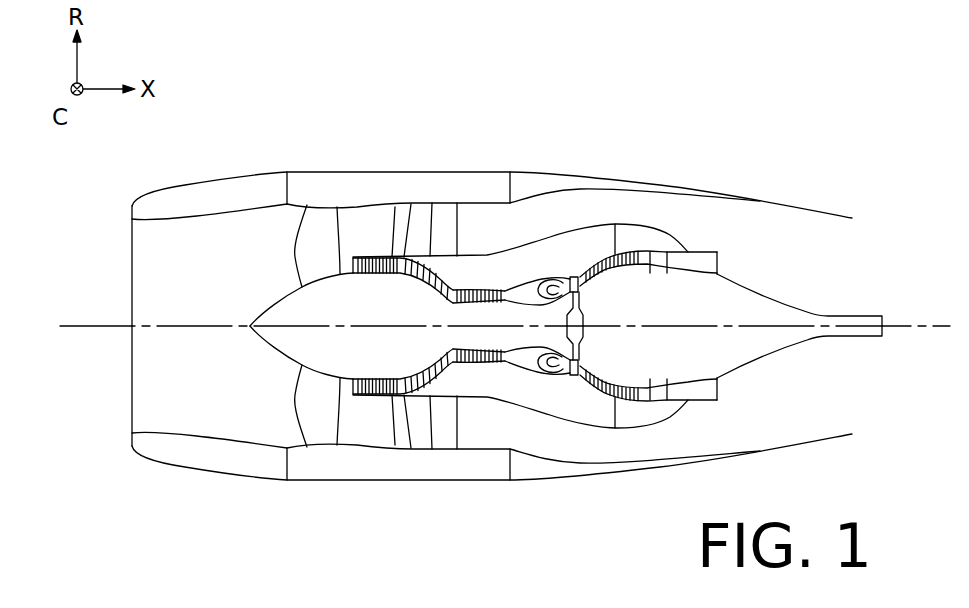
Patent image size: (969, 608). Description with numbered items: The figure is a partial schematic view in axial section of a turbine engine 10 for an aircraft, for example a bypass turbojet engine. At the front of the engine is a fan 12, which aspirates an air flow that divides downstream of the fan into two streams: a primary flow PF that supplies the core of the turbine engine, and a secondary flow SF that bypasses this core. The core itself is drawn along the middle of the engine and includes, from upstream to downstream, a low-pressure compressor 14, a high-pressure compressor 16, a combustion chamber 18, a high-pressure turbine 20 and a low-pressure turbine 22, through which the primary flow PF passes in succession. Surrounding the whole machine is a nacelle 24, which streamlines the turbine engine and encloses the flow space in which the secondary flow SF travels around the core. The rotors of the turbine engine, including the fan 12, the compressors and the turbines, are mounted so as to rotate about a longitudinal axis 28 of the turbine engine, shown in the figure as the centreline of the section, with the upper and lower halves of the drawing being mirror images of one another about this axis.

The turbine engine 10 is at (505, 297).
The fan 12 is at (310, 398).
The low-pressure compressor 14 is at (375, 258).
The high-pressure compressor 16 is at (490, 289).
The combustion chamber 18 is at (548, 279).
The high-pressure turbine 20 is at (574, 278).
The low-pressure turbine 22 is at (640, 252).
The nacelle 24 is at (405, 183).
The longitudinal axis 28 is at (78, 322).
The primary flow PF is at (442, 363).
The secondary flow SF is at (490, 424).